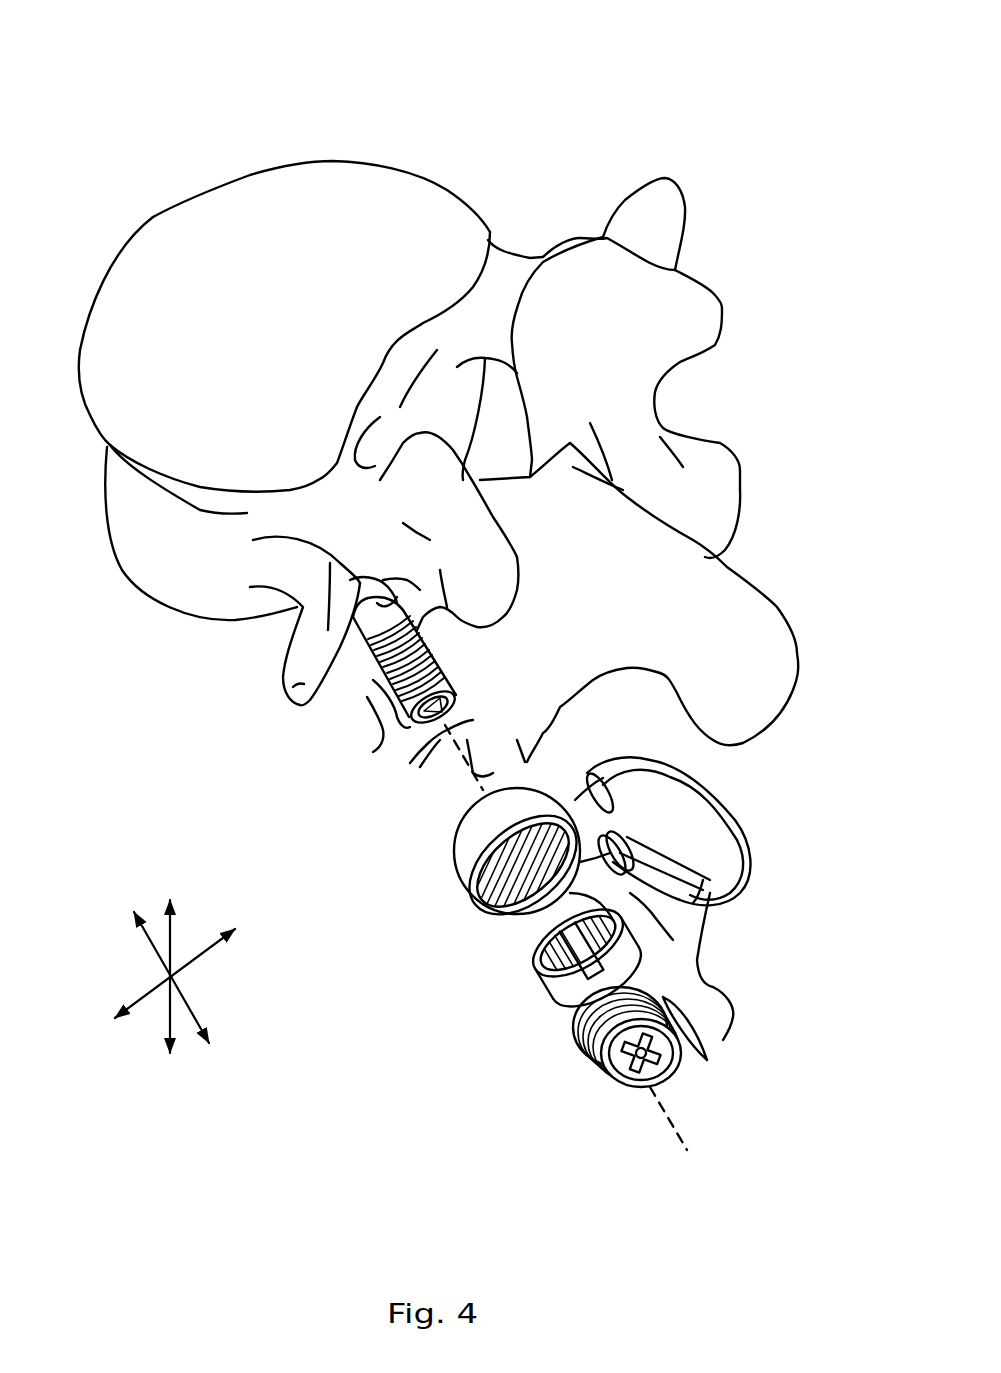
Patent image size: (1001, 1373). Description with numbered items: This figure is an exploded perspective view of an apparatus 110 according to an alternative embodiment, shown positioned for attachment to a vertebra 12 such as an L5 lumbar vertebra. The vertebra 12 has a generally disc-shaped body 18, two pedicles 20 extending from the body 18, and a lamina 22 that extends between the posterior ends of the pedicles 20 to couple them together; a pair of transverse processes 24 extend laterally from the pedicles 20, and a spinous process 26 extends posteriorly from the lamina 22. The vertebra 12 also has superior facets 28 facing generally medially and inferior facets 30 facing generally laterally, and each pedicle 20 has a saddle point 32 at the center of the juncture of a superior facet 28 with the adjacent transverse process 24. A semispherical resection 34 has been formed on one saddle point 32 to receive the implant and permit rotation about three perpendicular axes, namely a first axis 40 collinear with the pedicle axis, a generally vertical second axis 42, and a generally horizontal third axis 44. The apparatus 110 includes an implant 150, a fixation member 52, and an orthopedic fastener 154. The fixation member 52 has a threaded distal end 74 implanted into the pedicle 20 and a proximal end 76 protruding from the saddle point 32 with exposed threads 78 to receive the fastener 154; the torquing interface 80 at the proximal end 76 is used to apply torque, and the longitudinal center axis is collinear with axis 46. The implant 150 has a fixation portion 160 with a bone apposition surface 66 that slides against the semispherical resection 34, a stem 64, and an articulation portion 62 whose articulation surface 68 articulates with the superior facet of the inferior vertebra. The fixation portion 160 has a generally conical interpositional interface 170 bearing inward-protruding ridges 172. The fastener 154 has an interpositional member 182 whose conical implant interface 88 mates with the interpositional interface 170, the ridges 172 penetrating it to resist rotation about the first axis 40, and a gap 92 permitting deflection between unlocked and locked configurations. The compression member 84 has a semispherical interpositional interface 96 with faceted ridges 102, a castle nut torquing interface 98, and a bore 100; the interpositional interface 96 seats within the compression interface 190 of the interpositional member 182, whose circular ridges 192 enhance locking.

The vertebra 12 is at (151, 93).
The body 18 is at (400, 180).
The pedicle 20 is at (548, 212).
The lamina 22 is at (650, 403).
The transverse process 24 is at (663, 193).
The spinous process 26 is at (760, 712).
The superior facet 28 is at (617, 313).
The inferior facet 30 is at (723, 535).
The saddle point 32 is at (680, 242).
The semispherical resection 34 is at (290, 537).
The first axis 40 is at (197, 1010).
The second axis 42 is at (170, 940).
The third axis 44 is at (143, 987).
The axis 46 is at (680, 1127).
The fixation member 52 is at (480, 653).
The articulation portion 62 is at (729, 908).
The stem 64 is at (575, 787).
The bone apposition surface 66 is at (453, 847).
The articulation surface 68 is at (687, 907).
The distal end 74 is at (407, 587).
The proximal end 76 is at (466, 690).
The threads 78 is at (400, 680).
The screw axis 80 is at (433, 720).
The compression member 84 is at (531, 1091).
The implant interface 88 is at (520, 943).
The gap 92 is at (580, 1000).
The interpositional interface 96 is at (577, 1070).
The torquing interface 98 is at (603, 1093).
The bore 100 is at (627, 1093).
The ridges 102 is at (705, 1044).
The apparatus 110 is at (353, 1009).
The implant 150 is at (395, 890).
The orthopedic fastener 154 is at (710, 987).
The fixation portion 160 is at (445, 901).
The interpositional interface 170 is at (485, 912).
The ridges 172 is at (550, 822).
The interpositional member 182 is at (451, 1012).
The compression interface 190 is at (548, 985).
The ridges 192 is at (608, 962).